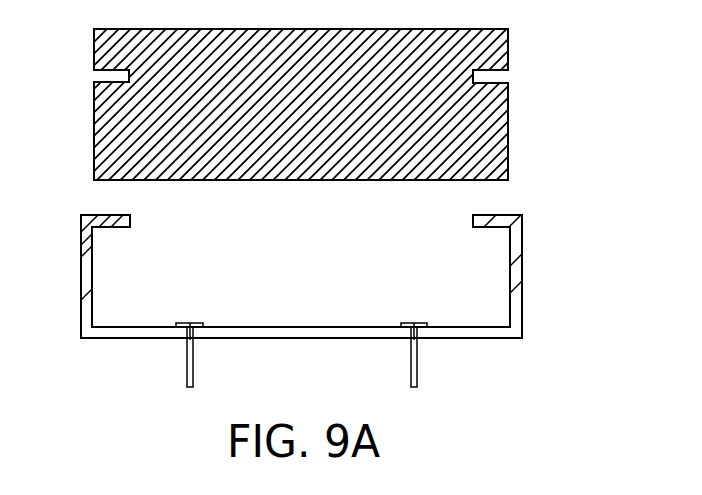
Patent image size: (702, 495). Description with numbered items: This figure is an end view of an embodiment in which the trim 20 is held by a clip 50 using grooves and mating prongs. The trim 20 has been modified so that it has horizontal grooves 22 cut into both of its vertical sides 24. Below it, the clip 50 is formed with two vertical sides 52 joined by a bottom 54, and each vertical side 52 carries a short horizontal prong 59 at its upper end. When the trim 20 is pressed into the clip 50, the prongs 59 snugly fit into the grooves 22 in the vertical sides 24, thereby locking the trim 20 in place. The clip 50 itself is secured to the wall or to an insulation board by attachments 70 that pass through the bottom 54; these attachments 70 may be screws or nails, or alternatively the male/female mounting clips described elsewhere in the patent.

The trim 20 is at (495, 128).
The grooves 22 is at (490, 78).
The vertical sides 24 is at (93, 128).
The clip 50 is at (538, 225).
The vertical sides 52 is at (523, 263).
The bottom 54 is at (473, 338).
The horizontal prong 59 is at (105, 218).
The attachments 70 is at (187, 365).